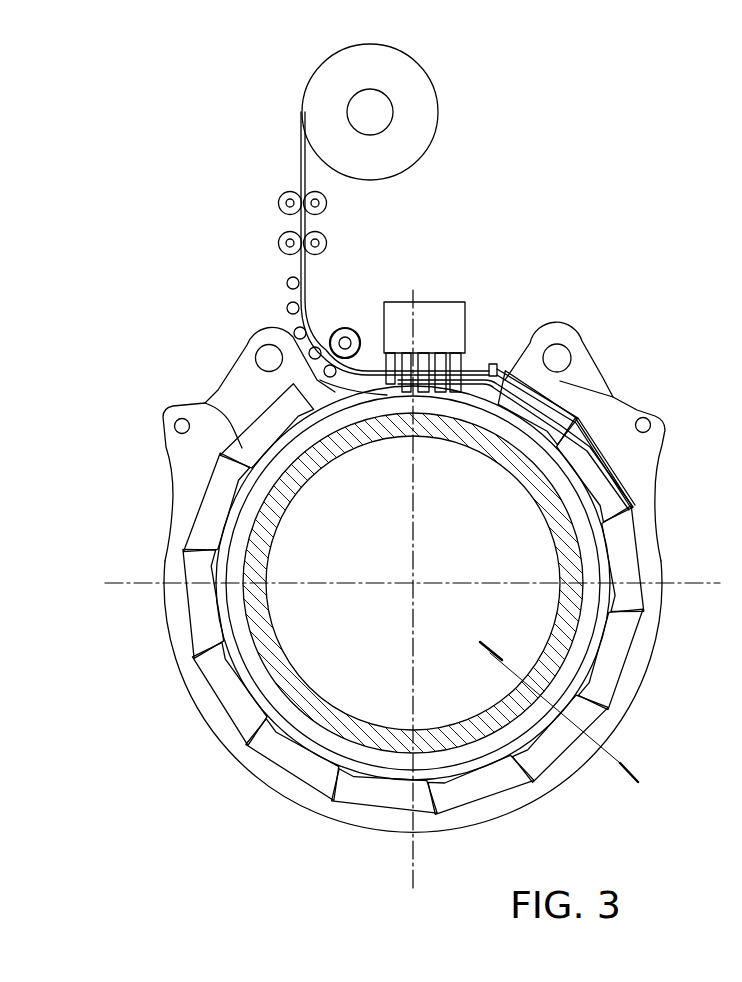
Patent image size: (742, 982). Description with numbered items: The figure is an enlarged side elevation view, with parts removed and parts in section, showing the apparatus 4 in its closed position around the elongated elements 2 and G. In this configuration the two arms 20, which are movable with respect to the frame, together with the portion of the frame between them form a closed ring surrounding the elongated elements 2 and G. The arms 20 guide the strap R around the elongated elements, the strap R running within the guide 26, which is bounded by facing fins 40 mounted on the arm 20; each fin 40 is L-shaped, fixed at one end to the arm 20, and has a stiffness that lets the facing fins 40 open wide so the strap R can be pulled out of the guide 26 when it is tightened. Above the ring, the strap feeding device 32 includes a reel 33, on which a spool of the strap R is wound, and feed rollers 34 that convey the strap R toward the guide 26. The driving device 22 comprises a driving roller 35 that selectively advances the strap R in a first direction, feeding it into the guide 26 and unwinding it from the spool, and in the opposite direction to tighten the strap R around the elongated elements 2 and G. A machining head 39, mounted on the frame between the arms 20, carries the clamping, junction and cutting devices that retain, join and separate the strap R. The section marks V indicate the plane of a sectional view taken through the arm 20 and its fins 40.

The elongated element 2 is at (272, 680).
The apparatus 4 is at (180, 168).
The arms 20 is at (170, 554).
The driving device 22 is at (366, 310).
The guide 26 is at (282, 690).
The strap feeding device 32 is at (395, 198).
The reel 33 is at (408, 92).
The feed rollers 34 is at (308, 194).
The driving roller 35 is at (338, 328).
The machining head 39 is at (480, 306).
The fins 40 is at (222, 490).
The strap R is at (498, 362).
The elongated element G is at (268, 760).
The section line V- V is at (486, 658).